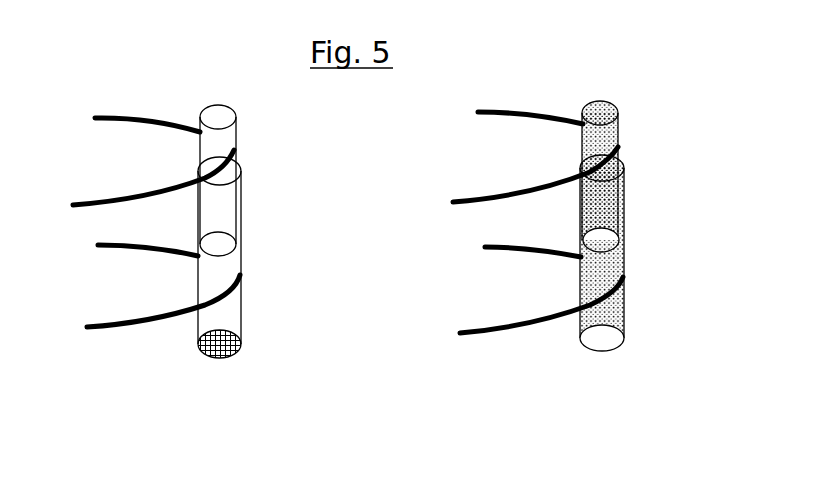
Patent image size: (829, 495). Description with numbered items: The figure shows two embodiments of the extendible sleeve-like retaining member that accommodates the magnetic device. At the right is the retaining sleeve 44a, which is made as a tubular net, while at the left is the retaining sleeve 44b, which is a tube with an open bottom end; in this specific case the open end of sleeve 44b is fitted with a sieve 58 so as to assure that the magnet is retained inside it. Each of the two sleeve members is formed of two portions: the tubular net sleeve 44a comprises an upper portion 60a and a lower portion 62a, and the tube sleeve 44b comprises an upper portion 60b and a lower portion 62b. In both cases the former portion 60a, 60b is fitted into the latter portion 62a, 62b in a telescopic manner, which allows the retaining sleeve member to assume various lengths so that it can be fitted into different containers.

The upper portion of tubular net sleeve 60a is at (623, 132).
The upper portion of tube sleeve 60b is at (242, 133).
The retaining sleeve (tubular net) 44a is at (632, 230).
The retaining sleeve (tube with open bottom) 44b is at (252, 232).
The lower portion of tubular net sleeve 62a is at (627, 302).
The lower portion of tube sleeve 62b is at (252, 302).
The sieve 58 is at (238, 355).